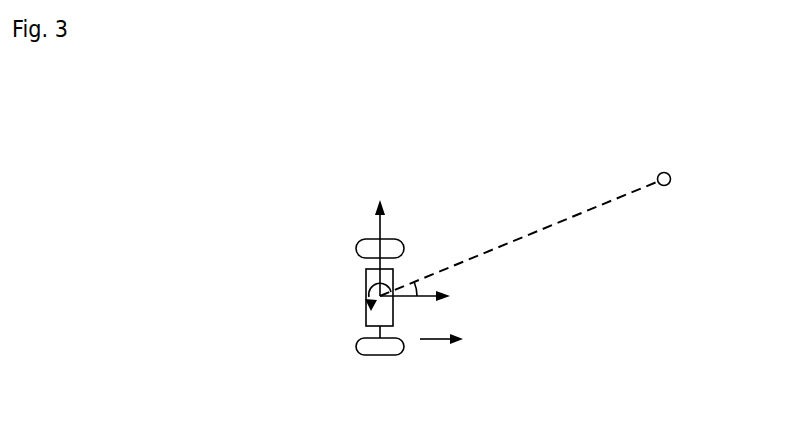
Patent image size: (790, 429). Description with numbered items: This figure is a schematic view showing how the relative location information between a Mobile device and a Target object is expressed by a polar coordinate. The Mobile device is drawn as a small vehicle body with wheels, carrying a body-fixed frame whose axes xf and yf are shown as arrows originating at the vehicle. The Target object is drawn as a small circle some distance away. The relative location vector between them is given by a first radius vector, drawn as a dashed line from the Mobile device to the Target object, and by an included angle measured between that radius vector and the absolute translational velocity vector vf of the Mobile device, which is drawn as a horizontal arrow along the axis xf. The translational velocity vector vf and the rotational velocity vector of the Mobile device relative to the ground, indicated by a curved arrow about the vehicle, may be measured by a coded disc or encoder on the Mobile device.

The mobile device Mobile device is at (352, 356).
The target object Target object is at (658, 170).
The body-frame x axis xf is at (424, 293).
The body-frame y axis yf is at (377, 232).
The absolute translational velocity vector vf is at (441, 352).